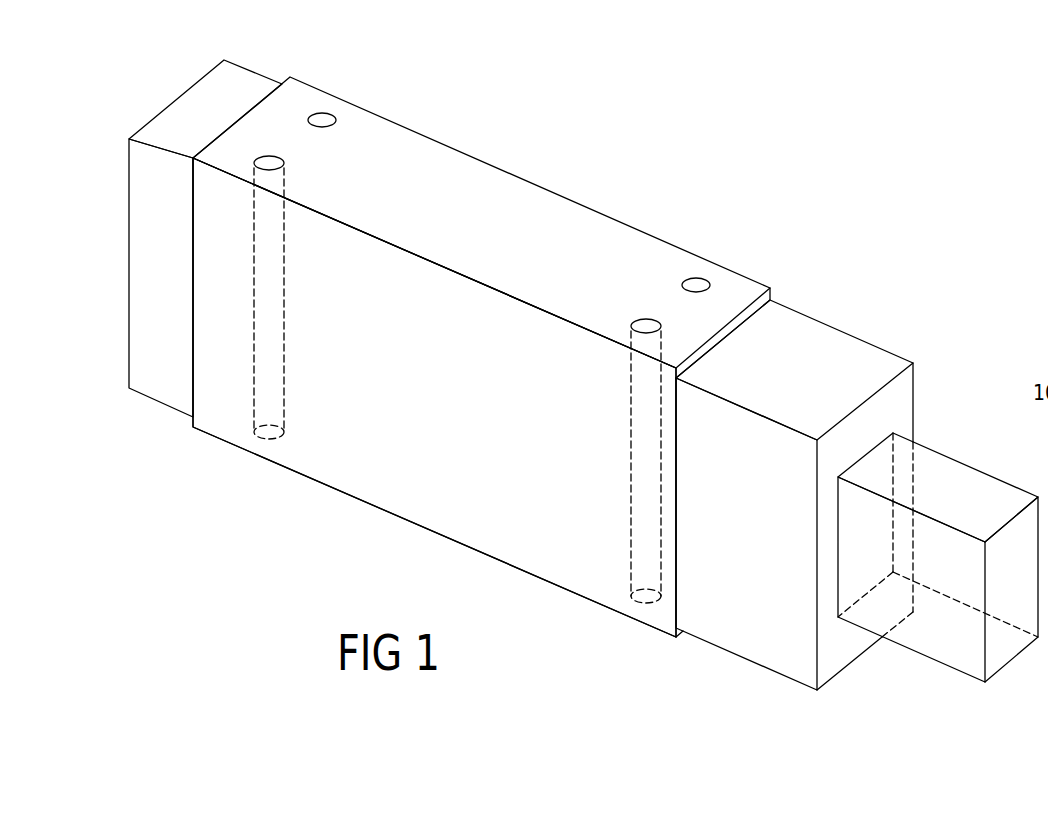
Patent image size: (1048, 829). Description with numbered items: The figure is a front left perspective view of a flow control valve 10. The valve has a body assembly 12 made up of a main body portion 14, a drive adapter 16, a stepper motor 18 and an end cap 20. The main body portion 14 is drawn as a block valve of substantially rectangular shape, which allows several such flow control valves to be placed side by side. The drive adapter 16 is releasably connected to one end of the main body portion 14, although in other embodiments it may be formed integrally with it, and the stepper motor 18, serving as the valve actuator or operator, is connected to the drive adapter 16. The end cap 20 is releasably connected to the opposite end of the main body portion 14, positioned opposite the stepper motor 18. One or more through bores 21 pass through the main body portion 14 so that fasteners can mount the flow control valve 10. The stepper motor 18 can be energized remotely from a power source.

The flow control valve 10 is at (762, 241).
The body assembly 12 is at (368, 507).
The main body portion 14 is at (300, 459).
The drive adapter 16 is at (765, 637).
The stepper motor 18 is at (953, 482).
The end cap 20 is at (165, 380).
The through bores 21 is at (270, 162).